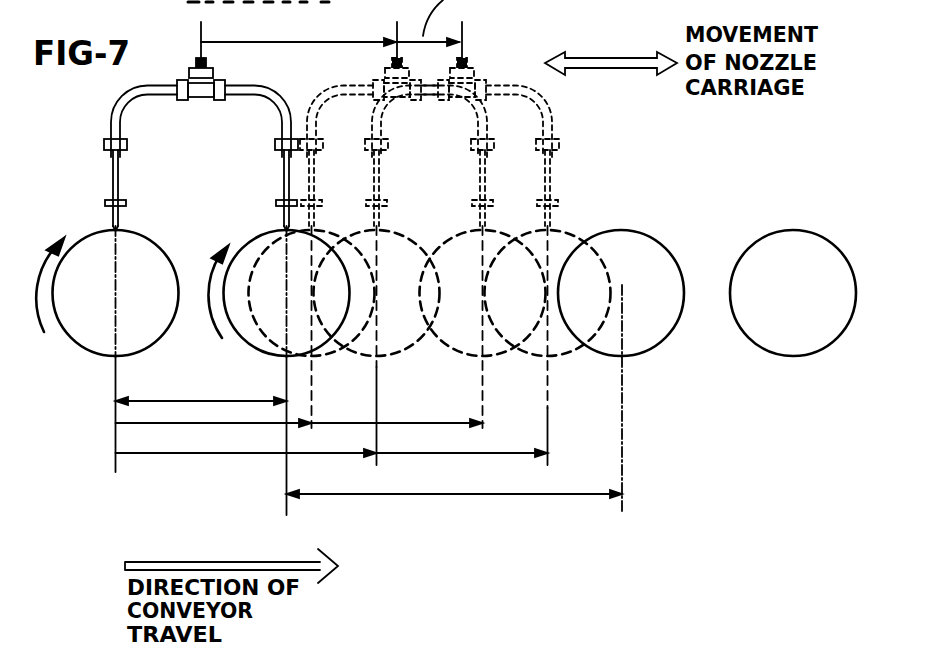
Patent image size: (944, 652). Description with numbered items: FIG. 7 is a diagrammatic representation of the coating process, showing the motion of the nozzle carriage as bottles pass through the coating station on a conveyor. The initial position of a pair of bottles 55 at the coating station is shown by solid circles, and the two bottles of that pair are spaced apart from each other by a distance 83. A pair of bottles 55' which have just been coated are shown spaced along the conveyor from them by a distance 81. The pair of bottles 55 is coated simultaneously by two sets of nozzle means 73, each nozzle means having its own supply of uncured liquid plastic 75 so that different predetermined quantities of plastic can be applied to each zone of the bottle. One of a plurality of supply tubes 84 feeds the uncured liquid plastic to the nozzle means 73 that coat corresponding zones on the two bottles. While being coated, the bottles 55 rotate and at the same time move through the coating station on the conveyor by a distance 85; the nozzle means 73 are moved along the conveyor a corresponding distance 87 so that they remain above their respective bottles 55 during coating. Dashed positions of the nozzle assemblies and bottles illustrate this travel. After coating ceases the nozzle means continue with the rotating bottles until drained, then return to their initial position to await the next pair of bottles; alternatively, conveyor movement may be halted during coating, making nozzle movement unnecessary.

The bottles 55 is at (192, 274).
The bottles which have just been coated 55' is at (707, 275).
The liquid applicator nozzle means 73 is at (112, 176).
The supply of uncured liquid plastic 75 is at (112, 114).
The distance along the conveyor 81 is at (470, 496).
The distance between bottles 83 is at (212, 398).
The supply tube 84 is at (204, 65).
The distance moved by bottles 85 is at (195, 425).
The distance moved by nozzle means 87 is at (286, 44).